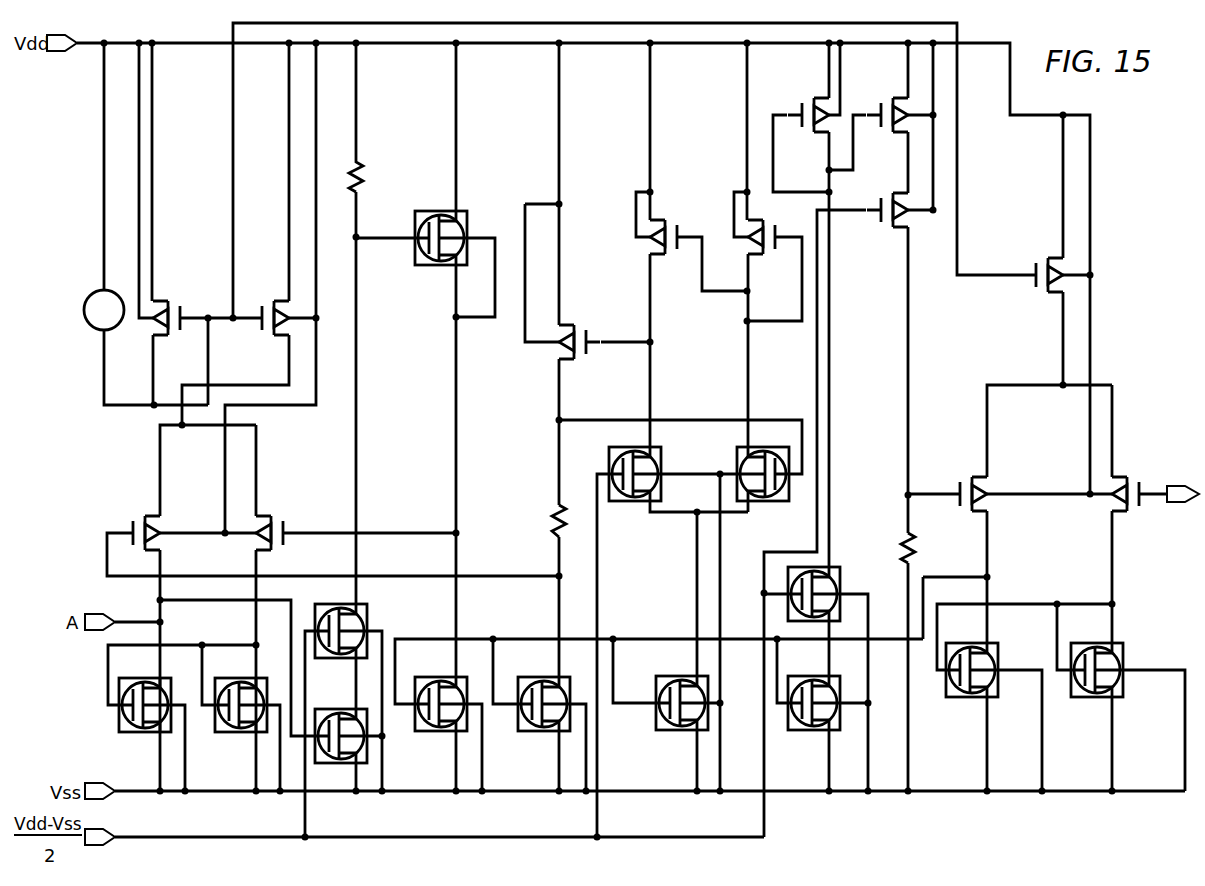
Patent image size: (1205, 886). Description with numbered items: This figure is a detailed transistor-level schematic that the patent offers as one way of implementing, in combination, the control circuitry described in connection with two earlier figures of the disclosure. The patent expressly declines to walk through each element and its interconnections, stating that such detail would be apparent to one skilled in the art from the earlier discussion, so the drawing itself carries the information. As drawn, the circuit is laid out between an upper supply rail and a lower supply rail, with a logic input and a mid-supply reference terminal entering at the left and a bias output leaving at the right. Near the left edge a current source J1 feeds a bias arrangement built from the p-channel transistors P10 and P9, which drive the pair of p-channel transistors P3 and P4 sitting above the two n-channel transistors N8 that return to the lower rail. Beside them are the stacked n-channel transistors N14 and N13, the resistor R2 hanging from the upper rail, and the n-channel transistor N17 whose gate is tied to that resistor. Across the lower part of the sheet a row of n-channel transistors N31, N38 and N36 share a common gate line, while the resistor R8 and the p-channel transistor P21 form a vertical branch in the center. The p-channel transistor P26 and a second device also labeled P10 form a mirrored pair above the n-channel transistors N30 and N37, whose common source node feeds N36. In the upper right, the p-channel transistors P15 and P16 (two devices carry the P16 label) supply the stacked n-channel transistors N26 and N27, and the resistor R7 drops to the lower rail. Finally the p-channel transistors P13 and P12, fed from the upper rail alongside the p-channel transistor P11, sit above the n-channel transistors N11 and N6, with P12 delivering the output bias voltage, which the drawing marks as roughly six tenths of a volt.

The current source J1 is at (146, 224).
The PMOS transistor P10 is at (477, 224).
The PMOS transistor P9 is at (249, 234).
The PMOS transistor P3 is at (333, 608).
The PMOS transistor P4 is at (356, 608).
The NMOS transistor N8 is at (202, 718).
The NMOS transistor N14 is at (359, 514).
The NMOS transistor N13 is at (271, 695).
The resistor R2 is at (372, 117).
The NMOS transistor N17 is at (431, 360).
The NMOS transistor N31 is at (659, 715).
The NMOS transistor N38 is at (539, 664).
The resistor R8 is at (575, 521).
The PMOS transistor P21 is at (587, 274).
The PMOS transistor P26 is at (691, 245).
The NMOS transistor N30 is at (672, 641).
The NMOS transistor N37 is at (680, 383).
The NMOS transistor N36 is at (666, 651).
The PMOS transistor P15 is at (806, 305).
The PMOS transistor P16 is at (848, 440).
The NMOS transistor N26 is at (824, 678).
The NMOS transistor N27 is at (822, 715).
The resistor R7 is at (926, 662).
The PMOS transistor P13 is at (1010, 514).
The PMOS transistor P12 is at (1156, 514).
The PMOS transistor P11 is at (661, 204).
The NMOS transistor N11 is at (1024, 697).
The NMOS transistor N6 is at (1121, 697).